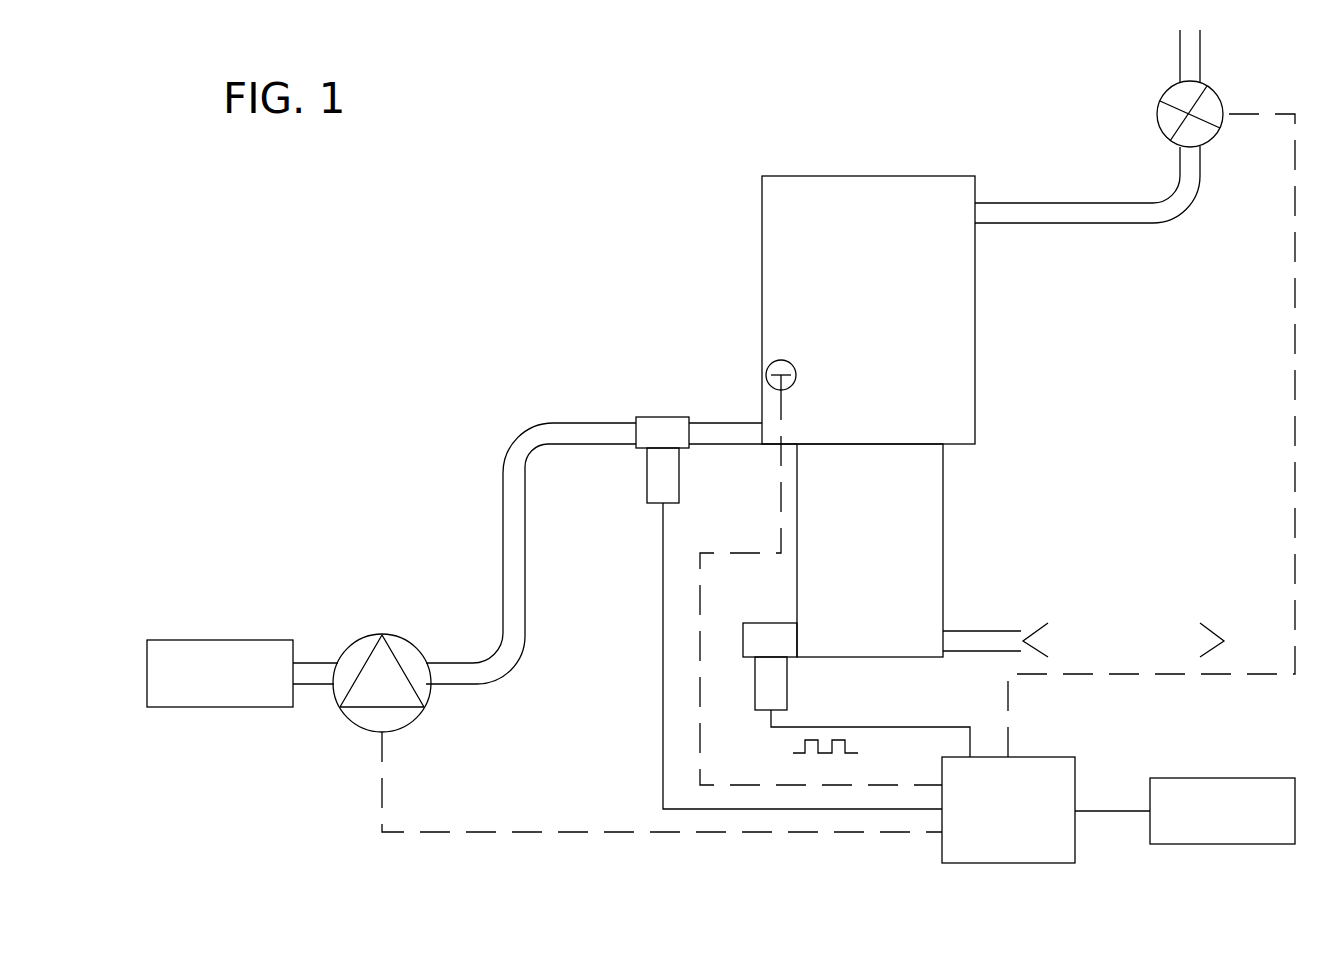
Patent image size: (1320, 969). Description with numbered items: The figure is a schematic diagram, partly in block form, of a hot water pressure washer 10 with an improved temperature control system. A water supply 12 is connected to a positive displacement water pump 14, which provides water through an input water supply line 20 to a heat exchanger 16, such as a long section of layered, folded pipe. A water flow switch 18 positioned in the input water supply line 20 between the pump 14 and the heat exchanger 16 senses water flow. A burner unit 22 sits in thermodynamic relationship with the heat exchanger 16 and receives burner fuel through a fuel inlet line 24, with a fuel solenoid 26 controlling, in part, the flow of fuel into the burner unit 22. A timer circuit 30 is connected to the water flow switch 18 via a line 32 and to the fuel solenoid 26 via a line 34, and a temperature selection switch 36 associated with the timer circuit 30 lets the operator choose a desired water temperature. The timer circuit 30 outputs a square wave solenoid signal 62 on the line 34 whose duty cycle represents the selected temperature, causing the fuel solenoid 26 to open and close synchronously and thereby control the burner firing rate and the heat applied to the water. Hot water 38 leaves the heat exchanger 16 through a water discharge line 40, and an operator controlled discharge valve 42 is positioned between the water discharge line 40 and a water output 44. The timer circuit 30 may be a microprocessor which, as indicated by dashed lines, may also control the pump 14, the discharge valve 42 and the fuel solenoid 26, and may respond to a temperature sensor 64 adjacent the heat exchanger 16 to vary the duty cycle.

The hot water pressure washer 10 is at (538, 282).
The water supply 12 is at (238, 638).
The positive displacement water pump 14 is at (400, 632).
The heat exchanger 16 is at (975, 331).
The water flow switch 18 is at (647, 481).
The input water supply line 20 is at (525, 435).
The burner unit 22 is at (943, 546).
The fuel inlet line 24 is at (984, 630).
The fuel solenoid 26 is at (787, 694).
The timer circuit 30 is at (1018, 757).
The line 32 is at (662, 787).
The line 34 is at (873, 727).
The temperature selection switch 36 is at (1178, 778).
The hot water 38 is at (938, 411).
The water discharge line 40 is at (1180, 157).
The operator controlled discharge valve 42 is at (1158, 109).
The water output 44 is at (1200, 57).
The square wave solenoid signal 62 is at (855, 752).
The temperature sensor 64 is at (796, 368).